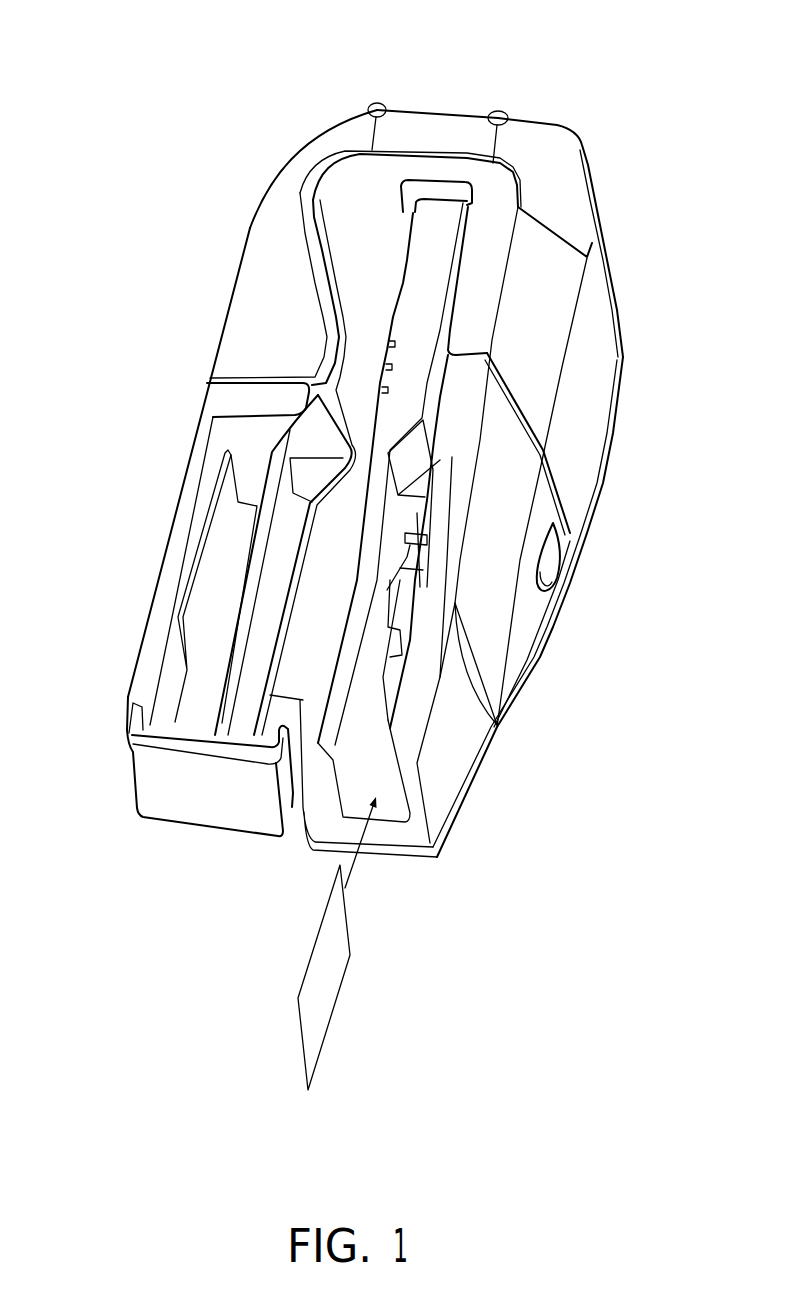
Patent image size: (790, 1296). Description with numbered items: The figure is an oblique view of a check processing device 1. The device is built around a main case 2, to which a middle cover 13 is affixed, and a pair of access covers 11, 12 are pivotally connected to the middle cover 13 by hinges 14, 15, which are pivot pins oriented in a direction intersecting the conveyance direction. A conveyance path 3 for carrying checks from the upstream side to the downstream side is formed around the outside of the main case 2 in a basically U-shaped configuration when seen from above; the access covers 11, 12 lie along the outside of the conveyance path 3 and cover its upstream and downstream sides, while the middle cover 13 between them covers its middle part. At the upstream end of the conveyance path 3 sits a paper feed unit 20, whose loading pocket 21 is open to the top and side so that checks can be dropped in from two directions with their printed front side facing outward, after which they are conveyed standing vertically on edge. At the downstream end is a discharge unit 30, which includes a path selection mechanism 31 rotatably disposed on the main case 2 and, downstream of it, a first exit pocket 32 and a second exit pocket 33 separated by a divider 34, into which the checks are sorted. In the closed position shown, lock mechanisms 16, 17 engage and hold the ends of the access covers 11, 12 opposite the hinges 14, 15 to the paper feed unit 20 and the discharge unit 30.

The check processing device 1 is at (220, 160).
The main case 2 is at (348, 190).
The conveyance path 3 is at (320, 260).
The access cover 11 is at (610, 275).
The access cover 12 is at (257, 230).
The middle cover 13 is at (413, 127).
The hinge 14 is at (505, 113).
The hinge 15 is at (375, 102).
The lock mechanism 16 is at (550, 553).
The lock mechanism 17 is at (183, 470).
The paper feed unit 20 is at (447, 757).
The loading pocket 21 is at (407, 620).
The discharge unit 30 is at (218, 576).
The path selection mechanism 31 is at (308, 440).
The first exit pocket 32 is at (207, 650).
The second exit pocket 33 is at (287, 557).
The divider 34 is at (213, 680).